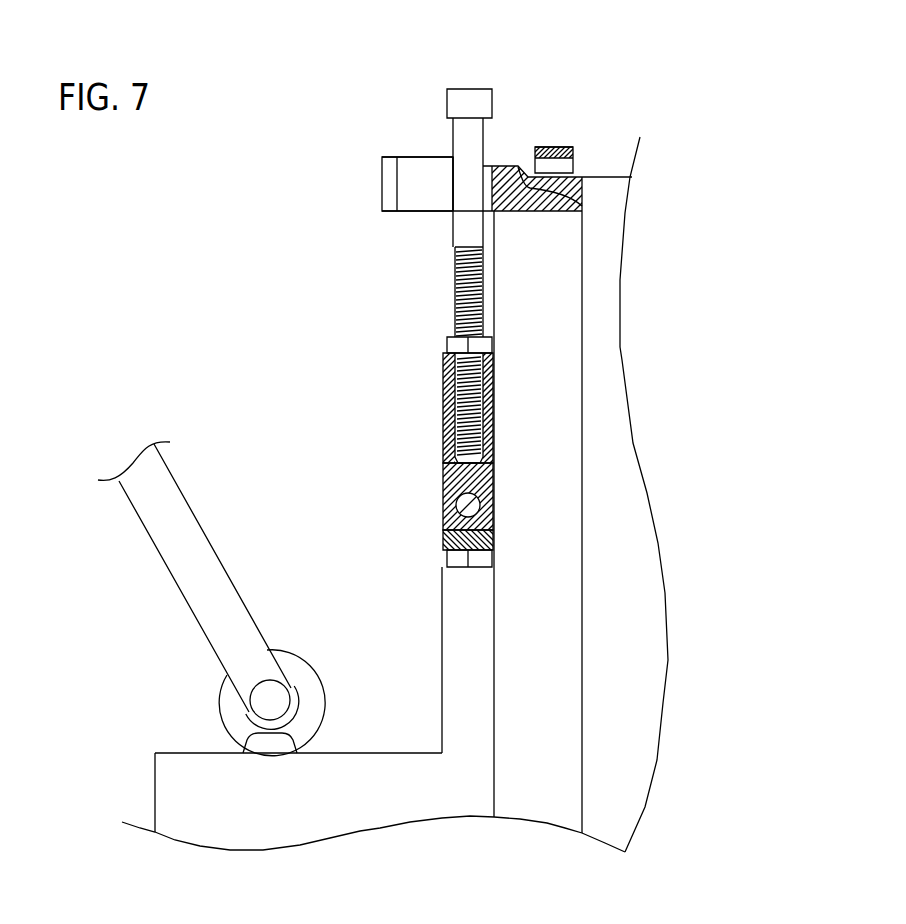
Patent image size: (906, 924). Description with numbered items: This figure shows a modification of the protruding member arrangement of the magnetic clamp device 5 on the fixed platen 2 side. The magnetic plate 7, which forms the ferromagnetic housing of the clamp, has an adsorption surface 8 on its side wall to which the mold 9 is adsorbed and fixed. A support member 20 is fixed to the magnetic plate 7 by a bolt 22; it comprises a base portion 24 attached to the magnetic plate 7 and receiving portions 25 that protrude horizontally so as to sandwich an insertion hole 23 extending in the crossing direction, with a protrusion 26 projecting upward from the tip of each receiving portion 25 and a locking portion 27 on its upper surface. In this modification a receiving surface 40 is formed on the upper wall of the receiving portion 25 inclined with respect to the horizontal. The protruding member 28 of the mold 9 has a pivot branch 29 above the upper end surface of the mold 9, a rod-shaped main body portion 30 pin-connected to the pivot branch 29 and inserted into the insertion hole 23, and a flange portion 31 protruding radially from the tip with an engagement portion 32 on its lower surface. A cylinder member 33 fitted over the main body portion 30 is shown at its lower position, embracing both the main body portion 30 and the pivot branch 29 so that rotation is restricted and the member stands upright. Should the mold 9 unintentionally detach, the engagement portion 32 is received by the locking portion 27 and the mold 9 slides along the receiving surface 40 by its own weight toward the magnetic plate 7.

The fixed platen 2 is at (635, 698).
The magnetic clamp device 5 is at (620, 790).
The magnetic plate 7 is at (550, 733).
The adsorption surface 8 is at (493, 717).
The mold 9 is at (472, 682).
The support member 20 is at (623, 203).
The bolt 22 is at (567, 157).
The insertion hole 23 is at (430, 190).
The base portion 24 is at (527, 168).
The receiving portion 25 is at (417, 238).
The protrusion 26 is at (383, 156).
The locking portion 27 is at (448, 148).
The protruding member 28 is at (422, 342).
The pivot branch 29 is at (443, 527).
The main body portion 30 is at (465, 225).
The flange portion 31 is at (475, 97).
The engagement portion 32 is at (504, 236).
The cylinder member 33 is at (443, 490).
The receiving surface 40 is at (424, 140).